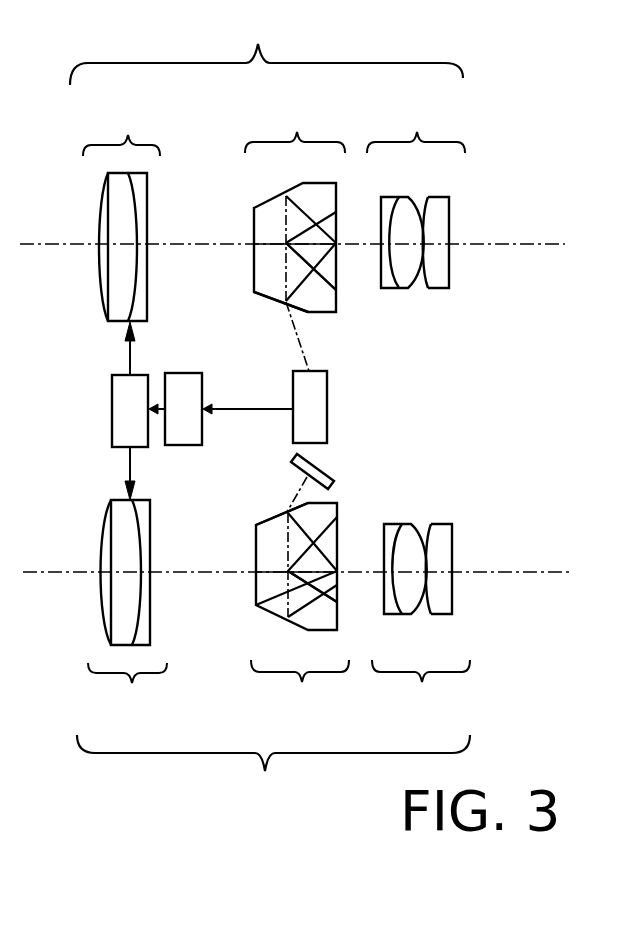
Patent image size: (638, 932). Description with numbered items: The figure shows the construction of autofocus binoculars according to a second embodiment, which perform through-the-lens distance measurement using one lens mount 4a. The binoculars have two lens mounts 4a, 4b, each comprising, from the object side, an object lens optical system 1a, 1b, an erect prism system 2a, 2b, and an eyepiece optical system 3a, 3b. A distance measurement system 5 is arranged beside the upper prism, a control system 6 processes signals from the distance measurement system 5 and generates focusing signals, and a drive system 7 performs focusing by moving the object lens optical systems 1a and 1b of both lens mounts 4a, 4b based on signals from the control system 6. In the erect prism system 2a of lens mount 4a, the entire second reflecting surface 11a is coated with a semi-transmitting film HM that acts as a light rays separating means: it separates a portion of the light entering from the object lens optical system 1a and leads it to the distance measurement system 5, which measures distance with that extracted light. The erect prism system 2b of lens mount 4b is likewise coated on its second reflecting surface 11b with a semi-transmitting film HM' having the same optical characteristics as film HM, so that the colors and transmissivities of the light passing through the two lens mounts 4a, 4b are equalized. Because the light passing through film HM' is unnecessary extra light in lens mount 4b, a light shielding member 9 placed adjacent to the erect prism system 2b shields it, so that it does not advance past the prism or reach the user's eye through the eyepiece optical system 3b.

The object lens optical system 1a is at (121, 211).
The object lens optical system 1b is at (127, 611).
The erect prism system 2a is at (295, 205).
The erect prism system 2b is at (300, 612).
The eyepiece optical system 3a is at (416, 193).
The eyepiece optical system 3b is at (421, 623).
The lens mount 4a is at (266, 50).
The lens mount 4b is at (273, 773).
The distance measurement system 5 is at (310, 407).
The control system 6 is at (183, 409).
The drive system 7 is at (130, 411).
The light shielding member 9 is at (330, 466).
The second reflecting surface 11a is at (262, 295).
The second reflecting surface 11b is at (279, 516).
The semi-transmitting film HM is at (286, 320).
The semi-transmitting film HM' is at (281, 511).